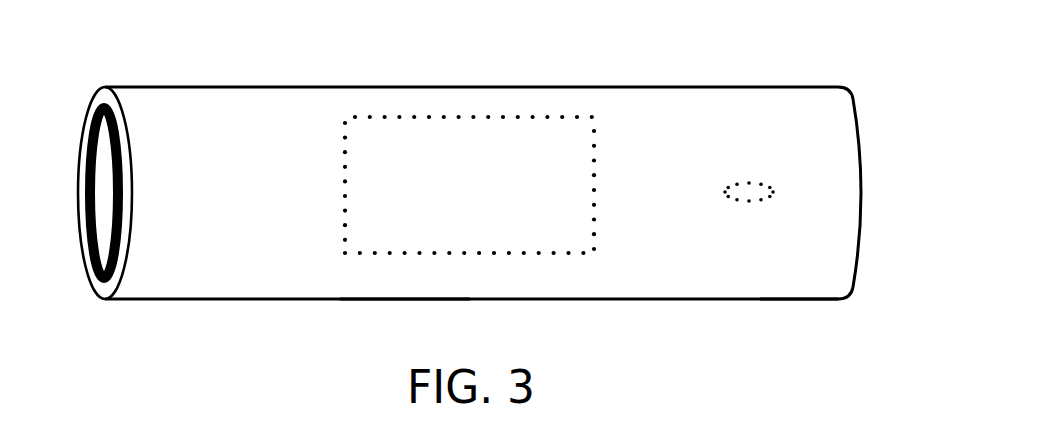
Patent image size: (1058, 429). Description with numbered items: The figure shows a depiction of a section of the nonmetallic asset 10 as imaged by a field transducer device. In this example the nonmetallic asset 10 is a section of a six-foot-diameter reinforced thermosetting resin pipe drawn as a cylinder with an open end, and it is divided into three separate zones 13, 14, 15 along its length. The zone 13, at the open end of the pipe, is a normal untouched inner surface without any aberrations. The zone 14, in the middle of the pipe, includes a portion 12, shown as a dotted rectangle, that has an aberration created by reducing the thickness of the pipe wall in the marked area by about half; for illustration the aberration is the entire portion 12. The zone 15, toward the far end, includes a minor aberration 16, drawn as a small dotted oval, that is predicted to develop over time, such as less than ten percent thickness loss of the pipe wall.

The nonmetallic asset 10 is at (720, 140).
The portion 12 is at (417, 137).
The zone 13 is at (185, 168).
The zone 14 is at (400, 277).
The zone 15 is at (809, 222).
The minor aberration 16 is at (762, 188).